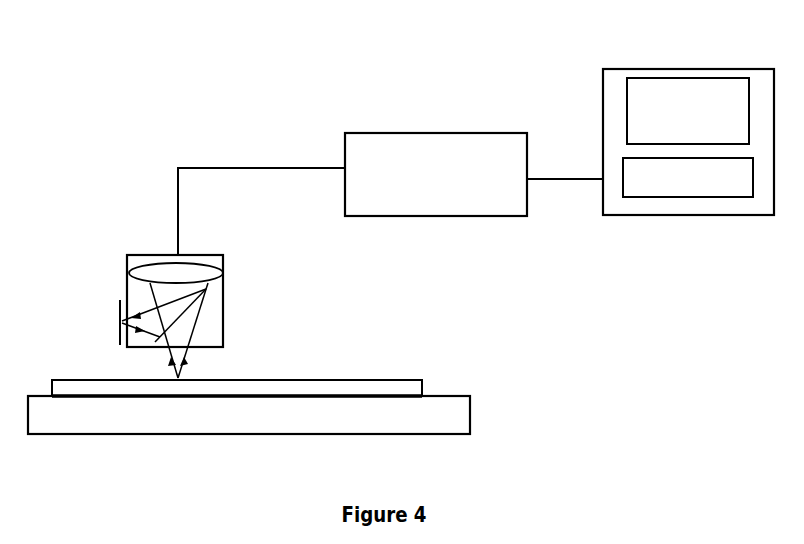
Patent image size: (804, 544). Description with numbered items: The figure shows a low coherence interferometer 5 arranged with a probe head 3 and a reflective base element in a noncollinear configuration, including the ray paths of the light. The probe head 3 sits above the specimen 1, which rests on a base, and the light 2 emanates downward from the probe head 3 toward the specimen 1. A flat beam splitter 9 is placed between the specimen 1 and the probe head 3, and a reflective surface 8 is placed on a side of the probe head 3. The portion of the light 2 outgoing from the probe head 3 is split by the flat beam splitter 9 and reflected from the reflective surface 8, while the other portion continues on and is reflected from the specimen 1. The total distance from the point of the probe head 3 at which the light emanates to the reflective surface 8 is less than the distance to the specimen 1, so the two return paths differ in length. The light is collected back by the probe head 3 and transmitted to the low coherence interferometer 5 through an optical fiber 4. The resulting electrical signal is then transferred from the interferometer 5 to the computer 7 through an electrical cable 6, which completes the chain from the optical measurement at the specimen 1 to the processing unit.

The specimen 1 is at (353, 378).
The light 2 is at (155, 367).
The probe head 3 is at (122, 268).
The optical fiber 4 is at (230, 159).
The low coherence interferometer 5 is at (438, 132).
The electrical cable 6 is at (564, 167).
The computer 7 is at (715, 65).
The reflective surface 8 is at (112, 320).
The flat beam splitter 9 is at (184, 318).